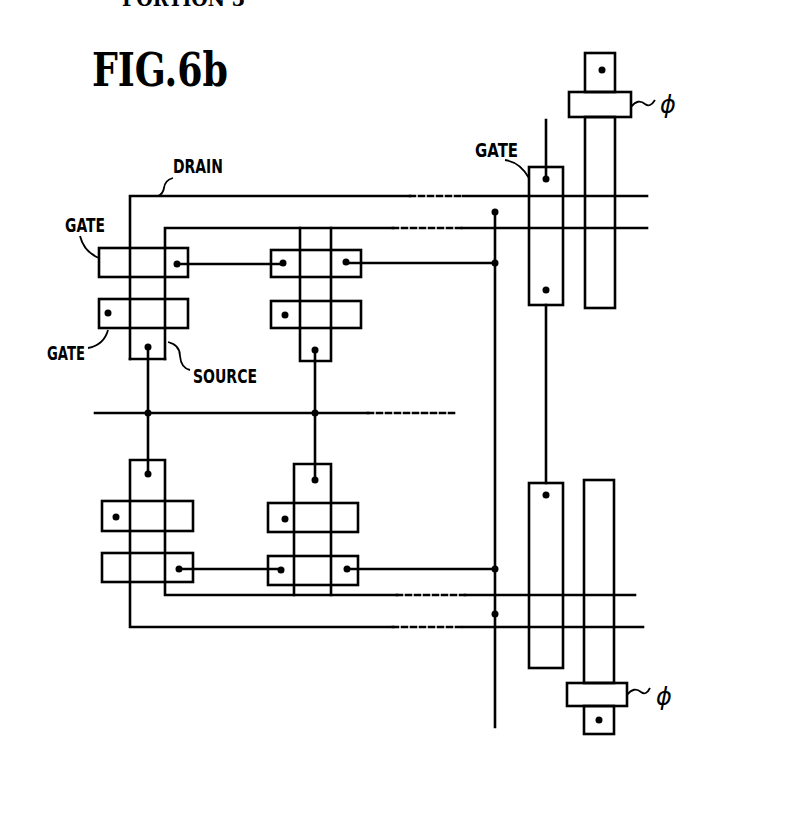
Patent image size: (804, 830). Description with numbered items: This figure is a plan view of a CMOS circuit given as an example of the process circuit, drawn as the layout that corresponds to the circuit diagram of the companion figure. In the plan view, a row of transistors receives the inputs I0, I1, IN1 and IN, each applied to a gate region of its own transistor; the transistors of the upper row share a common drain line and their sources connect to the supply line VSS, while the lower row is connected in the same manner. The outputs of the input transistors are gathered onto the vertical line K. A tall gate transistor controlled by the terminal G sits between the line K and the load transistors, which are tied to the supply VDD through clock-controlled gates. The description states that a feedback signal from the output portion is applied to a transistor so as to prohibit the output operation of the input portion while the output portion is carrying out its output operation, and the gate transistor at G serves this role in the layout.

The input transistor I0 is at (108, 313).
The input transistor I1 is at (285, 315).
The input transistor IN1 is at (116, 517).
The input transistor IN is at (285, 519).
The VSS supply line VSS is at (256, 415).
The output line K is at (482, 469).
The gate transistor G is at (546, 378).
The VDD load transistors VDD is at (599, 753).